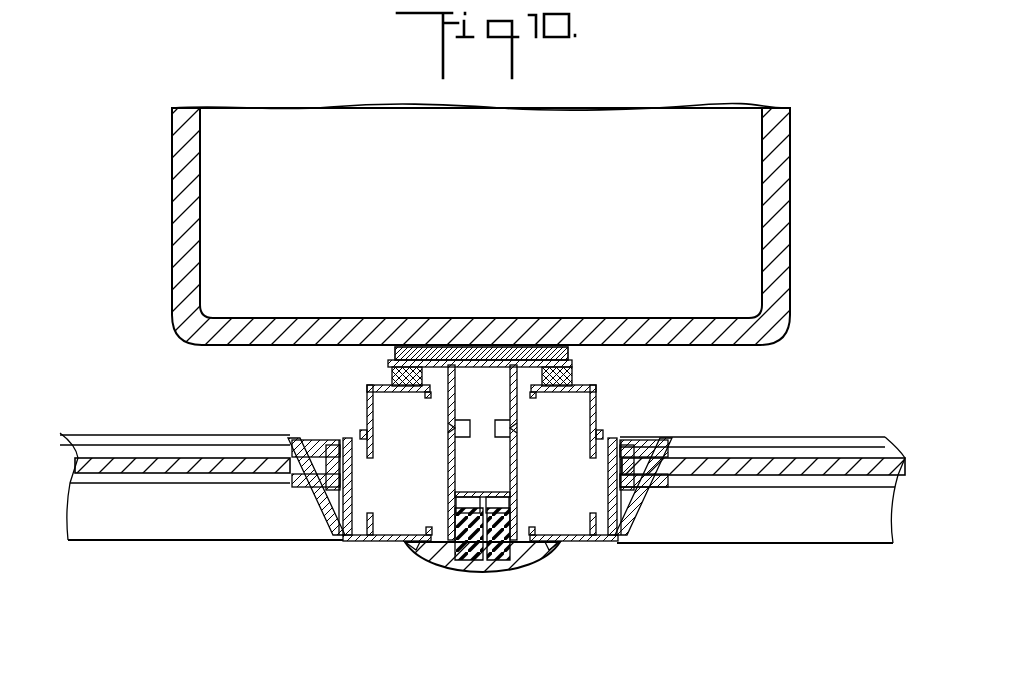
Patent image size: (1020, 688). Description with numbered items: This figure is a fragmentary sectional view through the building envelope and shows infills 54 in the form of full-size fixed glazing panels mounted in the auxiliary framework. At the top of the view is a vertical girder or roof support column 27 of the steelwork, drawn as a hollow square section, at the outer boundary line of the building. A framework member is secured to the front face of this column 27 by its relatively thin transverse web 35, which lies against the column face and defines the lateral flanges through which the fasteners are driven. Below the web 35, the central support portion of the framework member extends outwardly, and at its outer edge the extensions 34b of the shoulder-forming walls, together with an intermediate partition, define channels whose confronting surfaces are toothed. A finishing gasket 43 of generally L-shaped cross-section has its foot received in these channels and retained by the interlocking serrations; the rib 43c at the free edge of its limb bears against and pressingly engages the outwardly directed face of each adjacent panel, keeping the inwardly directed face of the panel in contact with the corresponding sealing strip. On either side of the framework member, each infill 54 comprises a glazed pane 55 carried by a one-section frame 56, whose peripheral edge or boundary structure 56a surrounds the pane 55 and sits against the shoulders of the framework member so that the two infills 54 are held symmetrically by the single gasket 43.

The roof support column 27 is at (792, 226).
The transverse web 35 is at (484, 352).
The peripheral edge structure 56a is at (367, 407).
The one-section frame 56 is at (157, 436).
The glazed pane 55 is at (158, 472).
The infill 54 is at (206, 549).
The shoulder-wall extension 34b is at (508, 520).
The finishing gasket 43 is at (446, 588).
The rib 43c is at (408, 548).